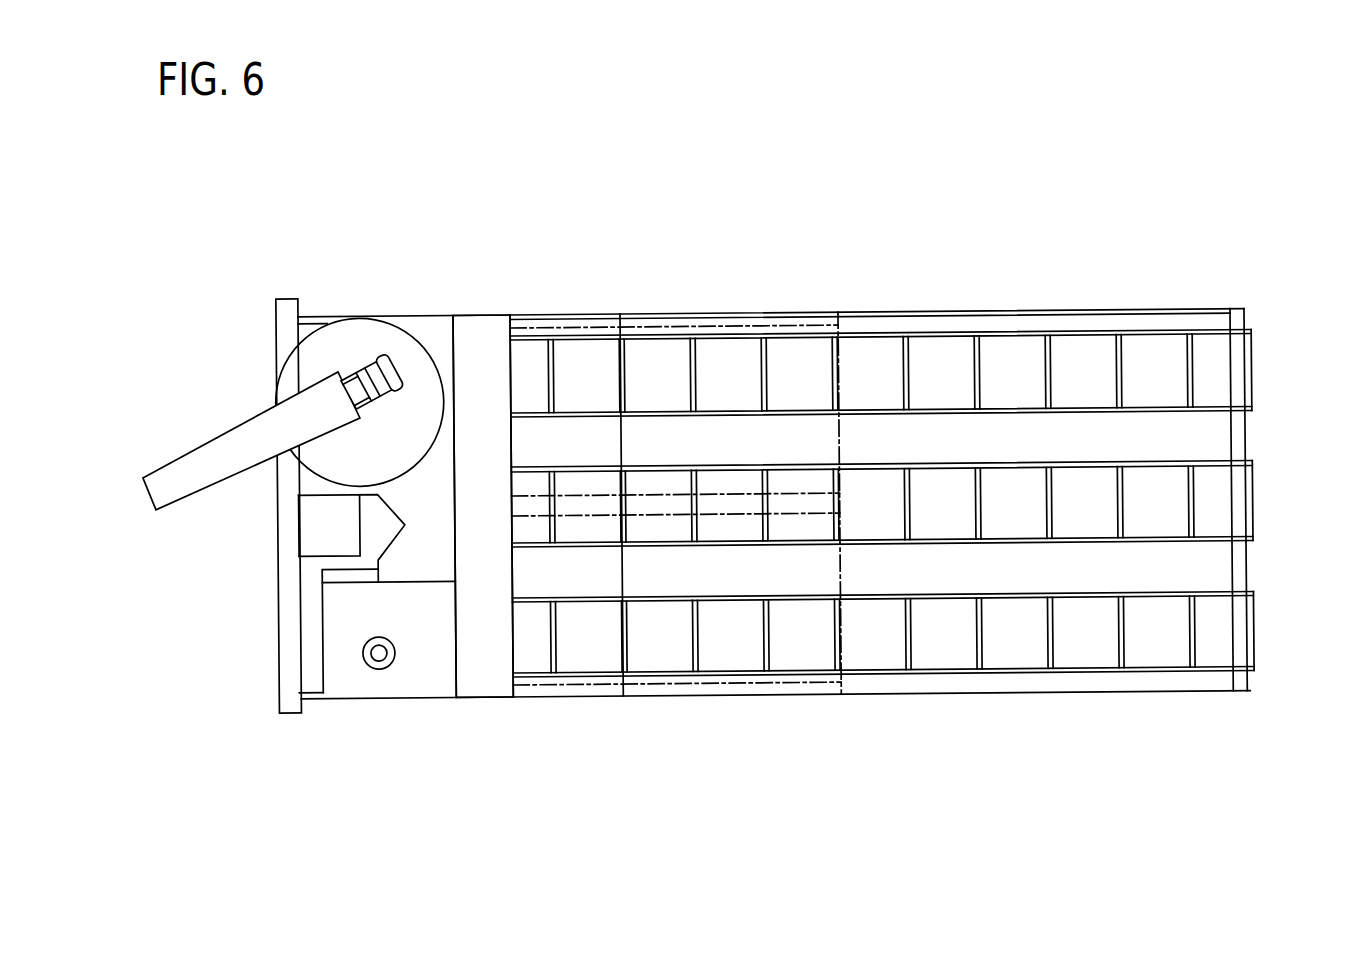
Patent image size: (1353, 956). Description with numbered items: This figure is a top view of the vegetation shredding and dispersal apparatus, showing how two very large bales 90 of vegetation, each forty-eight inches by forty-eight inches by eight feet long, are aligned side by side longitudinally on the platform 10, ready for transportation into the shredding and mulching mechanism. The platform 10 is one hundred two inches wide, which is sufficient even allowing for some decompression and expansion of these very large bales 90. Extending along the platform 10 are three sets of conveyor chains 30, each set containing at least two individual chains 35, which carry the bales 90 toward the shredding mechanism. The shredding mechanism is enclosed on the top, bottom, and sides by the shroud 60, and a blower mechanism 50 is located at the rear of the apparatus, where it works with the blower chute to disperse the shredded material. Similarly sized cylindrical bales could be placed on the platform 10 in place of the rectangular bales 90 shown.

The platform 10 is at (743, 464).
The conveyor chains 30 is at (926, 468).
The individual chains 35 is at (1251, 542).
The blower mechanism 50 is at (320, 528).
The shroud 60 is at (472, 343).
The bales 90 is at (788, 516).